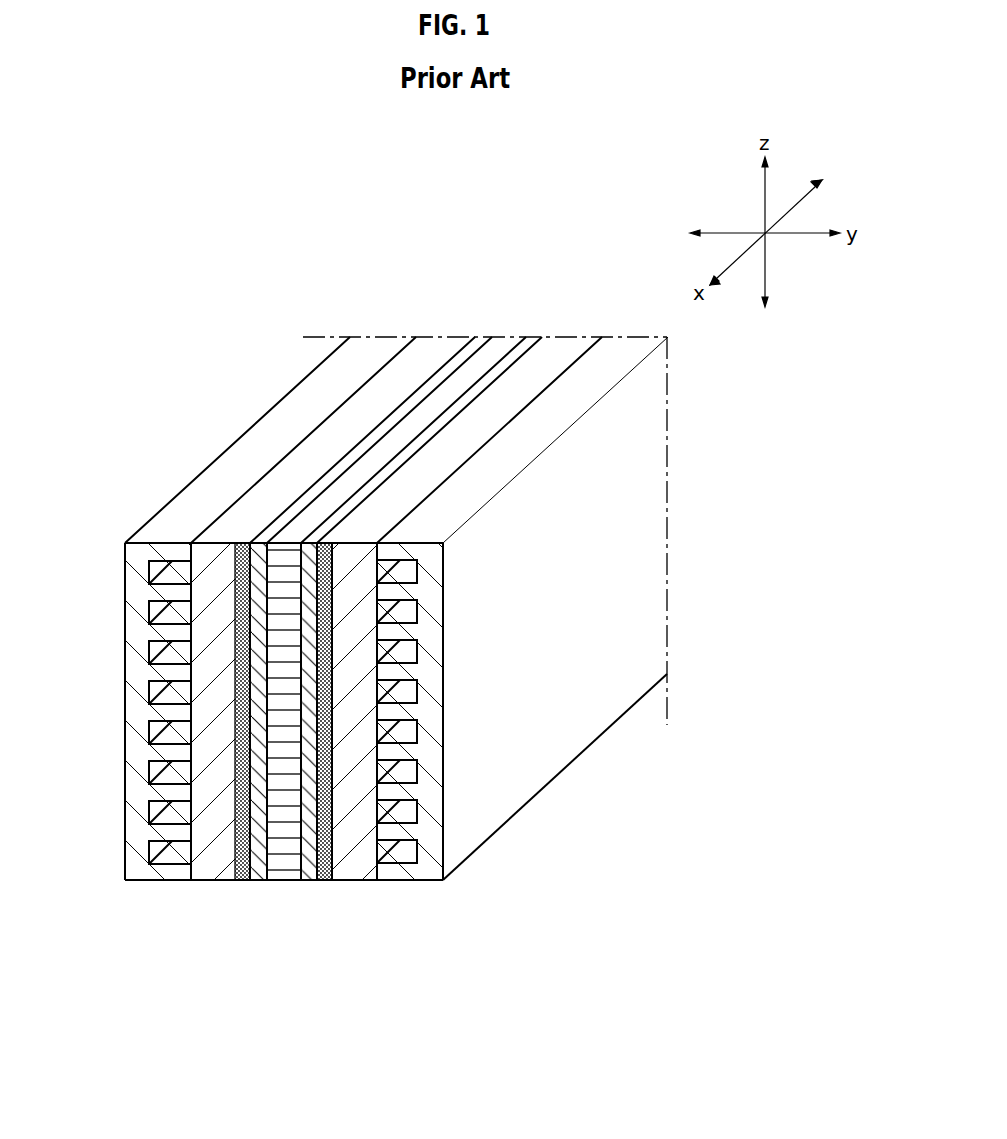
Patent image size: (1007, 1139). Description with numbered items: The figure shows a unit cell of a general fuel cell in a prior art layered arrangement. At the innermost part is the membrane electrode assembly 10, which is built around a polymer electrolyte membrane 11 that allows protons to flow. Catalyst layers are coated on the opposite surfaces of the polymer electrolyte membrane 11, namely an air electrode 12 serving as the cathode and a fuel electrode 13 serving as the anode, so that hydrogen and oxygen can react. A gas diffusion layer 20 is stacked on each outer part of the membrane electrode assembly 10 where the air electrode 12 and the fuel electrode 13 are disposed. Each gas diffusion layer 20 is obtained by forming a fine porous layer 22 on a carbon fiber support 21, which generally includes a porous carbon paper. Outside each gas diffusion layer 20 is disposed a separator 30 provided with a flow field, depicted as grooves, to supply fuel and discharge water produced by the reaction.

The membrane electrode assembly 10 is at (379, 718).
The polymer electrolyte membrane 11 is at (290, 878).
The air electrode 12 is at (263, 878).
The fuel electrode 13 is at (310, 873).
The gas diffusion layer 20 is at (285, 790).
The carbon fiber support 21 is at (212, 858).
The fine porous layer 22 is at (240, 875).
The separator 30 is at (140, 782).